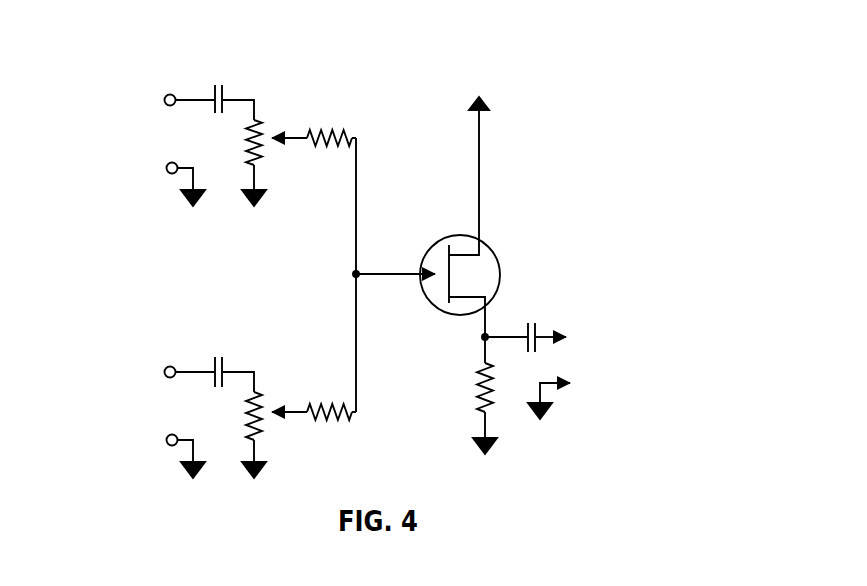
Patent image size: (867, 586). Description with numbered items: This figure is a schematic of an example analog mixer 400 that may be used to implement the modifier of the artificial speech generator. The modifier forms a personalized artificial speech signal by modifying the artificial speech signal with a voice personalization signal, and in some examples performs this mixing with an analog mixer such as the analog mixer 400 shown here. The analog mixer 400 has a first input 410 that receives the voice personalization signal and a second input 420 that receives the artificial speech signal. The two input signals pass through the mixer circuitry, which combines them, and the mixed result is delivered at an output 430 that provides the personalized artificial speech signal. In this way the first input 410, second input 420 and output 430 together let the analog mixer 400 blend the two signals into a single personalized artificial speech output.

The analog mixer 400 is at (695, 87).
The first input 410 is at (140, 138).
The second input 420 is at (140, 405).
The output 430 is at (608, 362).